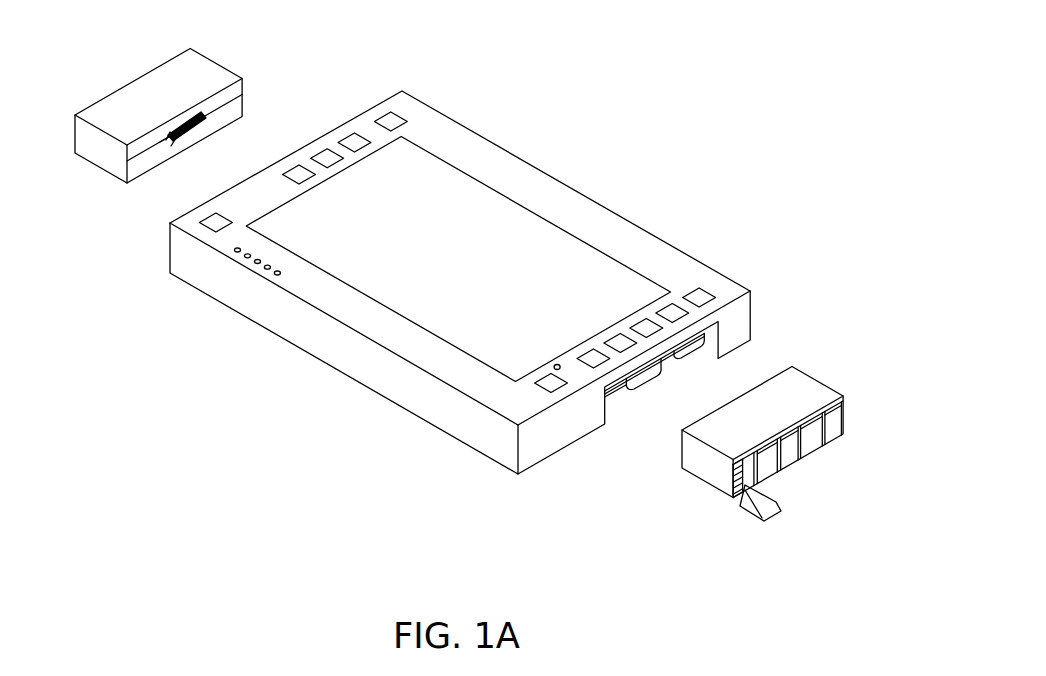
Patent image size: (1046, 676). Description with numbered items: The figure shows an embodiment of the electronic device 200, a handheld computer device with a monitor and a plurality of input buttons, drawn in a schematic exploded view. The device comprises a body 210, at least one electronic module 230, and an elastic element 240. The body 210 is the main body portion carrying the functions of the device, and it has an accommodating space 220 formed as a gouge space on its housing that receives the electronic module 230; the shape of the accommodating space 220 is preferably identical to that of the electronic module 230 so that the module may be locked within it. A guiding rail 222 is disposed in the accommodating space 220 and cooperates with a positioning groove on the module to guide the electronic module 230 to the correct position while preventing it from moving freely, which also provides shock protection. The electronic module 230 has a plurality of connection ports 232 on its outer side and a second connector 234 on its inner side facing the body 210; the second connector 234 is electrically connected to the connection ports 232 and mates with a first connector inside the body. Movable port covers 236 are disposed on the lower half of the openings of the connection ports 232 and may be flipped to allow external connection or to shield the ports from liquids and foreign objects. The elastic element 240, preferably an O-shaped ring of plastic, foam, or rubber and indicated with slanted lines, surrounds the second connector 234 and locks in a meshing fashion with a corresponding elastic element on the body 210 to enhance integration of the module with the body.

The electronic device 200 is at (831, 47).
The body 210 is at (538, 200).
The accommodating space 220 is at (633, 410).
The guiding rail 222 is at (677, 352).
The electronic module 230 is at (455, 284).
The connection ports 232 is at (748, 502).
The second connector 234 is at (203, 124).
The port covers 236 is at (770, 501).
The elastic element 240 is at (178, 135).